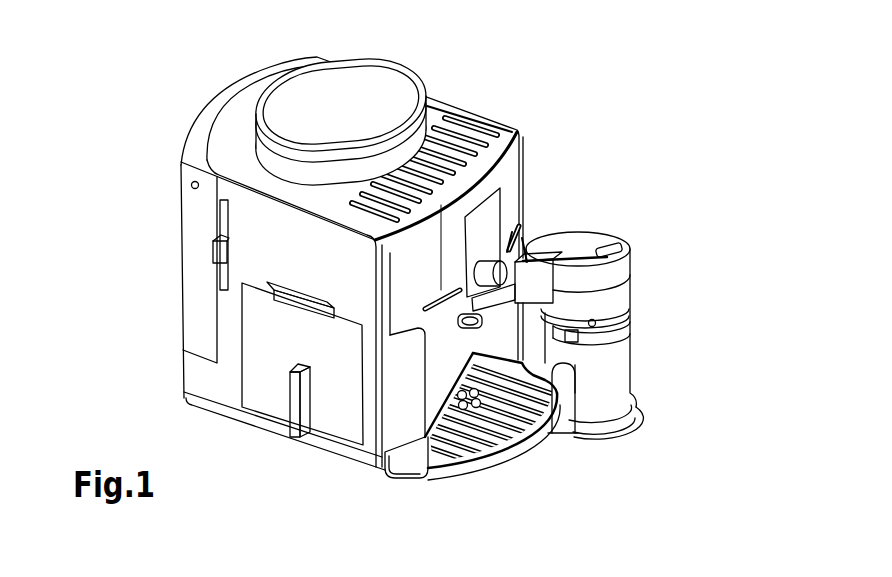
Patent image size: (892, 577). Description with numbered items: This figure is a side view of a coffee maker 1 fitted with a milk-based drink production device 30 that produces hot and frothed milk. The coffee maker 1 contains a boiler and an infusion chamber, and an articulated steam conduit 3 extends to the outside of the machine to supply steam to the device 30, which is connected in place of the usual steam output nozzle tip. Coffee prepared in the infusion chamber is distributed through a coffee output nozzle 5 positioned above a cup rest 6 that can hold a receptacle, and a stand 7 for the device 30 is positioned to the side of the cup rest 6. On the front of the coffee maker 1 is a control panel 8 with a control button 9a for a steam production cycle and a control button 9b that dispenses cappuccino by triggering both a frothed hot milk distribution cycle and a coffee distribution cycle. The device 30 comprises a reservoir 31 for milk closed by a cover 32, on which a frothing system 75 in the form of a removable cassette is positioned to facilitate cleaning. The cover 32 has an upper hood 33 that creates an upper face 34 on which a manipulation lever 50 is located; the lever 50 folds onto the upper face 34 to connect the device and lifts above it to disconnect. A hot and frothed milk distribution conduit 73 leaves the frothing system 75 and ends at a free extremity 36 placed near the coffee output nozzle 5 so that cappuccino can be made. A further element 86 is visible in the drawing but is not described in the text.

The coffee maker 1 is at (136, 100).
The articulated steam conduit 3 is at (535, 250).
The coffee output nozzle 5 is at (490, 312).
The cup rest 6 is at (457, 470).
The stand 7 is at (633, 413).
The control panel 8 is at (519, 224).
The control button 9a is at (516, 255).
The control button 9b is at (521, 250).
The milk-based drink production device 30 is at (672, 345).
The reservoir 31 is at (612, 380).
The cover 32 is at (627, 287).
The upper hood 33 is at (625, 242).
The upper face 34 is at (583, 247).
The free extremity 36 is at (466, 410).
The manipulation lever 50 is at (625, 297).
The hot and frothed milk distribution conduit 73 is at (554, 403).
The frothing system 75 is at (615, 323).
The control knob 86 is at (460, 326).